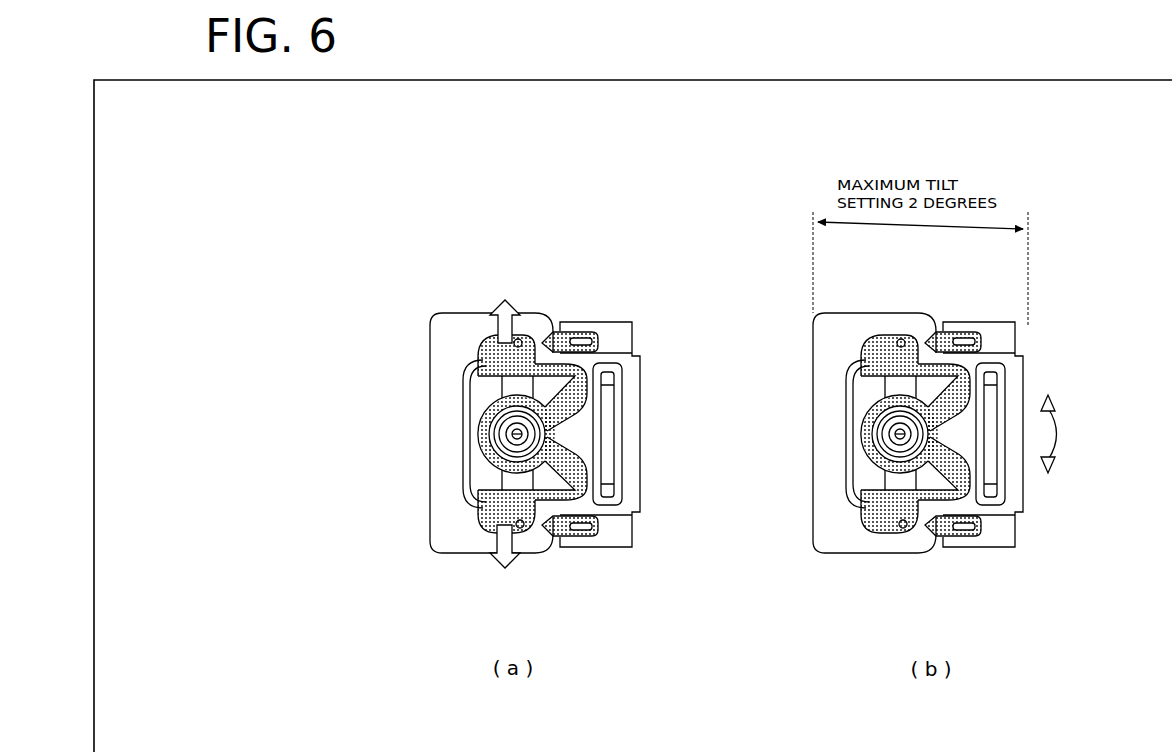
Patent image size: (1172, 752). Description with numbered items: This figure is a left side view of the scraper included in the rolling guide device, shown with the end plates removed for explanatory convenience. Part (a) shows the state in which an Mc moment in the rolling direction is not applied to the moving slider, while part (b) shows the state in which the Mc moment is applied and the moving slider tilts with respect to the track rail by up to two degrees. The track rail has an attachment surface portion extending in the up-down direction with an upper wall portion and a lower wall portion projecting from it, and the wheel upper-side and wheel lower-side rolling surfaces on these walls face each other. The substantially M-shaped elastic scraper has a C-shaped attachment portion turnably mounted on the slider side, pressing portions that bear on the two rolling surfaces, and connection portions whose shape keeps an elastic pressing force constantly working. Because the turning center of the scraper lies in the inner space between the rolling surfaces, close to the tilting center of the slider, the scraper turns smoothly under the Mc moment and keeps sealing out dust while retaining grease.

The Mc moment Mc is at (1065, 434).